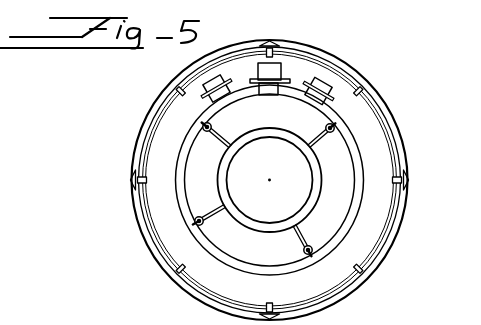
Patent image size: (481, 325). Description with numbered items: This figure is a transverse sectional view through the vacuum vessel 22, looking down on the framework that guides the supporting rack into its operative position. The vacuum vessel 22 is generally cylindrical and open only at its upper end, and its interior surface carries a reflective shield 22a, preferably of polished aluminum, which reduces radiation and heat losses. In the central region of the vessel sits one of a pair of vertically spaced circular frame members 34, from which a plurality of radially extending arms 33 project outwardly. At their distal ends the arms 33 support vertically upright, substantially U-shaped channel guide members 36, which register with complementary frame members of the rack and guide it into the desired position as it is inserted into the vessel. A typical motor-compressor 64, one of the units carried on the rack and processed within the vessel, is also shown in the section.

The vacuum vessel 22 is at (400, 124).
The reflective shield 22a is at (165, 121).
The radially extending arms 33 is at (209, 131).
The circular frame members 34 is at (243, 226).
The U-shaped channel guide members 36 is at (200, 216).
The motor-compressor 64 is at (283, 70).